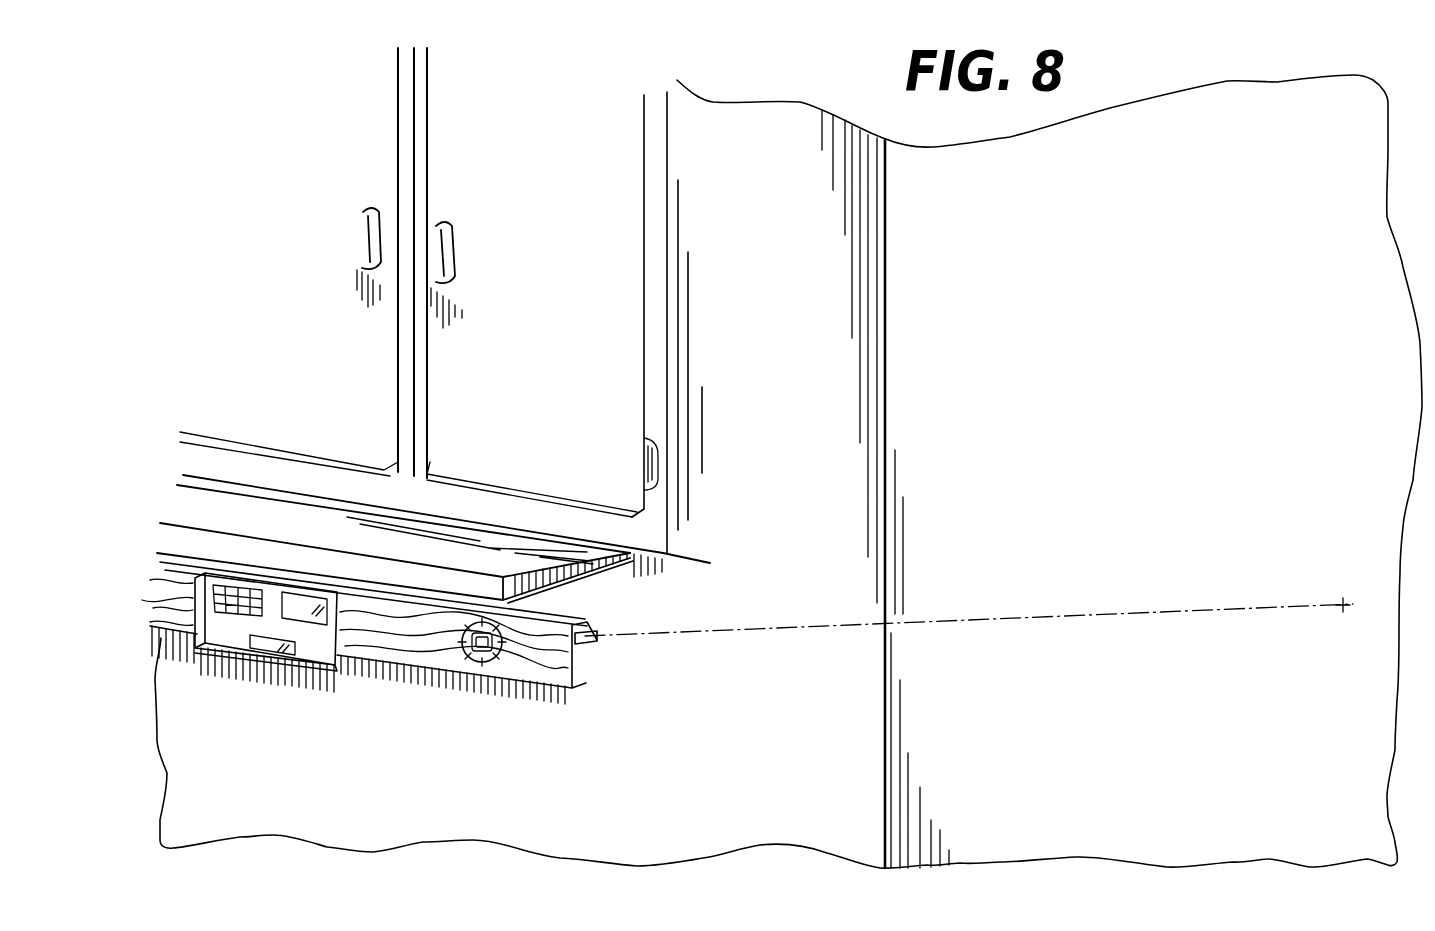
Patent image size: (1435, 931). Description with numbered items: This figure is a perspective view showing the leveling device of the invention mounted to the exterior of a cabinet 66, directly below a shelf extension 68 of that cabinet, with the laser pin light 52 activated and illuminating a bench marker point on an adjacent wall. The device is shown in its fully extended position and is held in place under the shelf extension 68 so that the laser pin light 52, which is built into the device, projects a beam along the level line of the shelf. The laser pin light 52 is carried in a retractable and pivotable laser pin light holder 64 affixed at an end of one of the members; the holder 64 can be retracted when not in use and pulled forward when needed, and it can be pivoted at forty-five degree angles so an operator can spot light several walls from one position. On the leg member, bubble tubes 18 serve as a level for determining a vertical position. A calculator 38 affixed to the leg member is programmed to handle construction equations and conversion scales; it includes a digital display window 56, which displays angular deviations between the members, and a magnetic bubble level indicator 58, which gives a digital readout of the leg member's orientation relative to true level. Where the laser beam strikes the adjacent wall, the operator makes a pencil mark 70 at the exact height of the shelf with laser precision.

The bubble tube 18 is at (482, 660).
The calculator 38 is at (271, 631).
The laser pin light 52 is at (600, 632).
The digital display window 56 is at (302, 605).
The magnetic bubble level indicator 58 is at (287, 650).
The laser pin light holder 64 is at (580, 650).
The cabinet 66 is at (607, 372).
The shelf extension 68 is at (621, 567).
The pencil mark 70 is at (1341, 600).